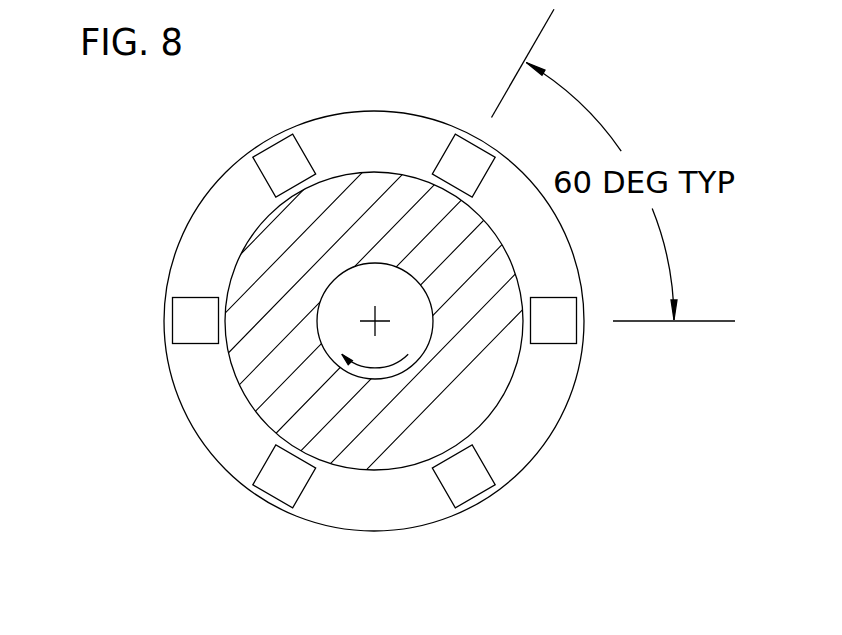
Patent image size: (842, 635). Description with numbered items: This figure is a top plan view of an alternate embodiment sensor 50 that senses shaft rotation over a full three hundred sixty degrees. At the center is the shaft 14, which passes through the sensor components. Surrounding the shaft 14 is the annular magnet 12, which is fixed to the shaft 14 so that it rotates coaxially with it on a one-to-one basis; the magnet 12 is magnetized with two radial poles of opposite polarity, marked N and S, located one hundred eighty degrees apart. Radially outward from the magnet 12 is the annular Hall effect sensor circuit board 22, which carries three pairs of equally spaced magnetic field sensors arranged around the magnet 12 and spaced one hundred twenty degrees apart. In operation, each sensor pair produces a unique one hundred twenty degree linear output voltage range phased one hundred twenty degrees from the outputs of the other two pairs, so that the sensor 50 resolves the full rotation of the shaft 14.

The magnet 12 is at (510, 390).
The shaft 14 is at (330, 293).
The printed circuit board 22 is at (540, 455).
The sensor 50 is at (344, 323).